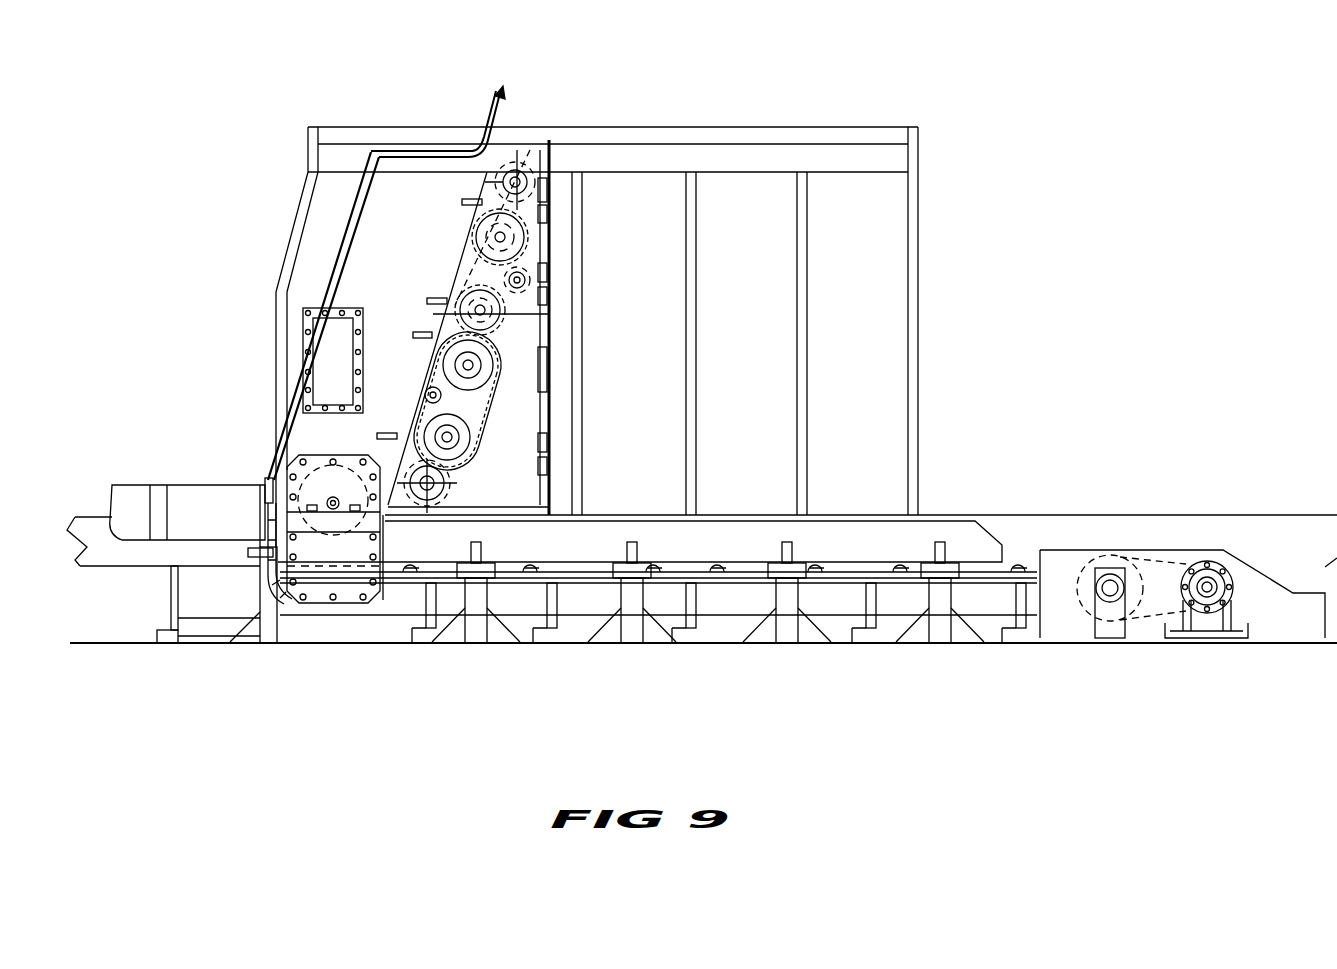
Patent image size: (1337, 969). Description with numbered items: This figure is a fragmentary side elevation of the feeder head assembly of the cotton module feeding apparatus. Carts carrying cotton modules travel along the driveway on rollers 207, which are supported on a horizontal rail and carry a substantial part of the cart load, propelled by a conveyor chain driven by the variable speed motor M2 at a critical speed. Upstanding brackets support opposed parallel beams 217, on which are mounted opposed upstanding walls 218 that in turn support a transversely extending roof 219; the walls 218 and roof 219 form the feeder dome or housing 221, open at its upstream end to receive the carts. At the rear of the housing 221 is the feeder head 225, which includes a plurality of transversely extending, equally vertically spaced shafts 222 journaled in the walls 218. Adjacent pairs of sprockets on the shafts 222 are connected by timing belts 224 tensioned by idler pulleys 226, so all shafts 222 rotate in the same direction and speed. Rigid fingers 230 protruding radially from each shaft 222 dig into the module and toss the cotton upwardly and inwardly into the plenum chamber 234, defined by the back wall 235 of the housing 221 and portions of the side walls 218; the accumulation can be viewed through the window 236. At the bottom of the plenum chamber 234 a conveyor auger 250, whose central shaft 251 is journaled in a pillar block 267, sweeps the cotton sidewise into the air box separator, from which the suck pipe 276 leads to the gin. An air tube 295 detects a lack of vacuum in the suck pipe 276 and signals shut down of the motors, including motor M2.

The feeder dome or housing 221 is at (917, 118).
The roof 219 is at (758, 137).
The upstanding walls 218 is at (878, 290).
The plenum chamber 234 is at (318, 201).
The back wall 235 is at (284, 257).
The window 236 is at (323, 362).
The feeder head 225 is at (428, 256).
The air tube 295 is at (488, 118).
The fingers 230 is at (525, 142).
The timing belts 224 is at (530, 250).
The idler pulleys 226 is at (528, 278).
The shafts 222 is at (505, 312).
The suck pipe 276 is at (135, 497).
The conveyor auger 250 is at (318, 480).
The central shaft 251 is at (331, 510).
The pillar block 267 is at (381, 528).
The beams 217 is at (962, 533).
The rollers 207 is at (533, 566).
The variable speed motor M2 is at (1200, 623).